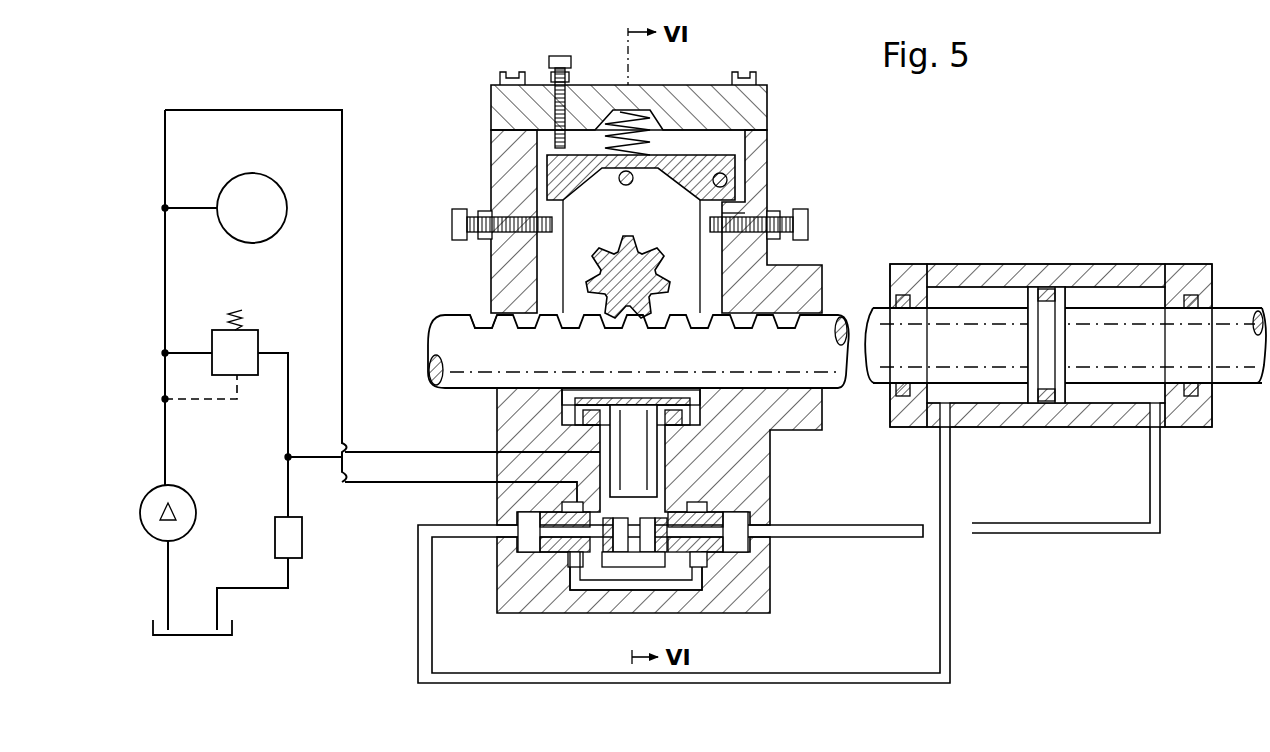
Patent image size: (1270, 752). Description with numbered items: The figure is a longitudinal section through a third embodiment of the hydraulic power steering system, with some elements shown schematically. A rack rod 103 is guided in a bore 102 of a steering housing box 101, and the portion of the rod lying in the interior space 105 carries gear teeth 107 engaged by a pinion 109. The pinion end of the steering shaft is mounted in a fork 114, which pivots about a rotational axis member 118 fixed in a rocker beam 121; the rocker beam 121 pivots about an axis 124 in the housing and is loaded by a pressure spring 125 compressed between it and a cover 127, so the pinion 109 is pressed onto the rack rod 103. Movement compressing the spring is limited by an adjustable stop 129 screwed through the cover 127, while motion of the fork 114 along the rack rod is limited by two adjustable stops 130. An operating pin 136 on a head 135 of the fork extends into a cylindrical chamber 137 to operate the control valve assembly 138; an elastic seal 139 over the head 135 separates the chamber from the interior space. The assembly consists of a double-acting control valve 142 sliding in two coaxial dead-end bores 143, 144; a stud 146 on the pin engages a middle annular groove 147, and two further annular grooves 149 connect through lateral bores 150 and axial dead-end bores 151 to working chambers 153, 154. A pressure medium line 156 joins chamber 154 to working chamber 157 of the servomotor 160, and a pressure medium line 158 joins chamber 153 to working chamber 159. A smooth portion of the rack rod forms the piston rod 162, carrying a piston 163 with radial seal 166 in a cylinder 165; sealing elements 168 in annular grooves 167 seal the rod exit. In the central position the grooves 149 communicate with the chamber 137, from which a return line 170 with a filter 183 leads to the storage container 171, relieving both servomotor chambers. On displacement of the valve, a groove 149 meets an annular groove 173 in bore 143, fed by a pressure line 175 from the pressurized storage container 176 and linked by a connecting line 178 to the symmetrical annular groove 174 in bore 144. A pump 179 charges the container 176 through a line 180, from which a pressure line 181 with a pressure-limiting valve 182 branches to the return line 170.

The steering housing box 101 is at (757, 150).
The bore 102 is at (483, 392).
The rack rod 103 is at (528, 366).
The interior space 105 is at (745, 212).
The gear teeth 107 is at (668, 312).
The pinion 109 is at (600, 262).
The fork 114 is at (560, 277).
The rotational axis member 118 is at (633, 186).
The rocker beam 121 is at (548, 175).
The axis 124 is at (728, 180).
The pressure spring 125 is at (638, 110).
The cover 127 is at (768, 94).
The adjustable stop 129 is at (555, 137).
The adjustable stops 130 is at (485, 215).
The head 135 is at (658, 396).
The operating pin 136 is at (616, 451).
The cylindrical chamber 137 is at (668, 455).
The control valve assembly 138 is at (740, 570).
The elastic seal 139 is at (520, 430).
The double-acting control valve 142 is at (545, 558).
The dead end bore 143 is at (527, 540).
The blind bore 144 is at (752, 542).
The stud 146 is at (624, 505).
The annular groove 147 is at (633, 565).
The annular grooves 149 is at (690, 568).
The lateral bore 150 is at (583, 582).
The axial dead-end bores 151 is at (548, 572).
The working chamber 153 is at (528, 518).
The working chamber 154 is at (742, 518).
The pressure medium line 156 is at (882, 538).
The working chamber 157 is at (1112, 292).
The pressure medium line 158 is at (856, 683).
The working chamber 159 is at (962, 292).
The servomotor 160 is at (1036, 248).
The piston rod 162 is at (988, 398).
The piston 163 is at (1052, 300).
The cylinder 165 is at (1145, 277).
The radial seal 166 is at (1047, 400).
The annular groove 167 is at (907, 420).
The sealing elements 168 is at (896, 298).
The return line 170 is at (378, 452).
The pressure medium storage container 171 is at (210, 636).
The annular groove 173 is at (568, 565).
The annular groove 174 is at (712, 560).
The pressure line 175 is at (262, 110).
The pressurized storage container 176 is at (268, 188).
The connecting line 178 is at (606, 592).
The pump 179 is at (148, 502).
The line 180 is at (165, 375).
The pressure line 181 is at (184, 352).
The pressure-limiting valve 182 is at (257, 342).
The filter 183 is at (302, 537).